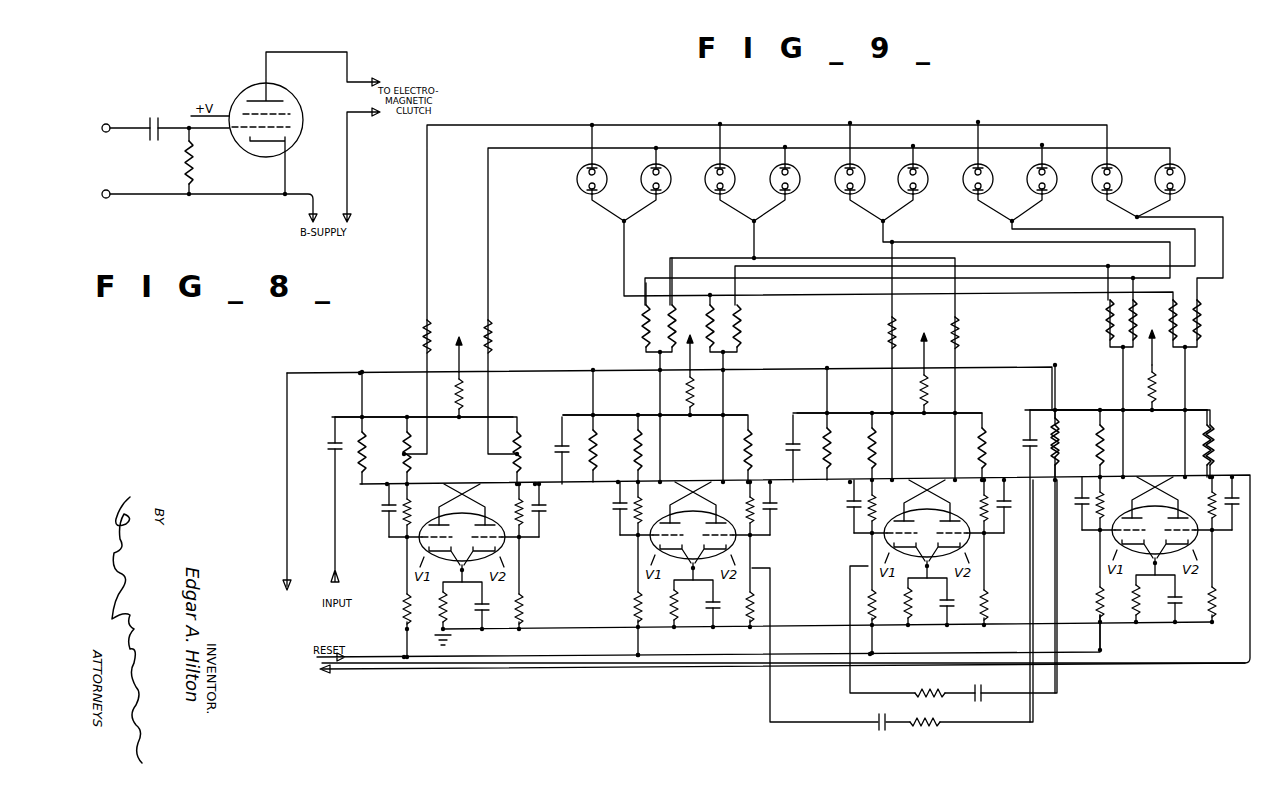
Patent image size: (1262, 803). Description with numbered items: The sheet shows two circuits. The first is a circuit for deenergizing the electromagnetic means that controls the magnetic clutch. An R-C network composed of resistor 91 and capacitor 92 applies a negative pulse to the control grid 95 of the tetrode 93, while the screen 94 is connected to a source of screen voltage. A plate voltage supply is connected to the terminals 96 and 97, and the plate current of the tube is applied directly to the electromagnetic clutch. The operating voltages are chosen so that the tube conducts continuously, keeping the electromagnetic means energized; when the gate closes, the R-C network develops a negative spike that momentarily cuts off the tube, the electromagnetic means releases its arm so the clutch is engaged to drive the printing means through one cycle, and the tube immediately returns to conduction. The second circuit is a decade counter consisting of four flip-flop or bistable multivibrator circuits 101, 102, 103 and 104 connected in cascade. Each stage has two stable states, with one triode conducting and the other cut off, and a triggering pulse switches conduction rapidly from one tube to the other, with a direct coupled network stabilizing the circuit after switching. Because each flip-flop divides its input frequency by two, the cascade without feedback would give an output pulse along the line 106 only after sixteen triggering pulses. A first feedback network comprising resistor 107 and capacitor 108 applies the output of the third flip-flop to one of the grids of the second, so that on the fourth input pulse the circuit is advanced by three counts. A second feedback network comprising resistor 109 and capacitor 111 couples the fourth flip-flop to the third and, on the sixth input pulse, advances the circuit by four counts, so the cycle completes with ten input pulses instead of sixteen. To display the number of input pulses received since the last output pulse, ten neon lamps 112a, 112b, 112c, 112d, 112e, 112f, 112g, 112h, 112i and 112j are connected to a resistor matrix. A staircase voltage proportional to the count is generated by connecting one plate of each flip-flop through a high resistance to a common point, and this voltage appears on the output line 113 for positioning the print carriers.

In FIG. 8, the resistor 91 is at (196, 175).
In FIG. 8, the capacitor 92 is at (152, 120).
In FIG. 8, the tetrode 93 is at (246, 91).
In FIG. 8, the screen 94 is at (287, 113).
In FIG. 8, the control grid 95 is at (290, 128).
In FIG. 8, the terminal 96 is at (300, 193).
In FIG. 8, the terminal 97 is at (350, 188).
In FIG. 9, the flip-flop circuit 101 is at (470, 432).
In FIG. 9, the flip-flop circuit 102 is at (703, 435).
In FIG. 9, the flip-flop circuit 103 is at (935, 435).
In FIG. 9, the flip-flop circuit 104 is at (1163, 427).
In FIG. 9, the output line 106 is at (453, 668).
In FIG. 9, the resistor 107 is at (947, 725).
In FIG. 9, the capacitor 108 is at (872, 728).
In FIG. 9, the resistor 109 is at (917, 690).
In FIG. 9, the capacitor 111 is at (984, 684).
In FIG. 9, the neon lamp 112a is at (580, 198).
In FIG. 9, the neon lamp 112b is at (665, 198).
In FIG. 9, the neon lamp 112c is at (712, 198).
In FIG. 9, the neon lamp 112d is at (795, 197).
In FIG. 9, the neon lamp 112e is at (862, 188).
In FIG. 9, the neon lamp 112f is at (922, 197).
In FIG. 9, the neon lamp 112g is at (990, 186).
In FIG. 9, the neon lamp 112h is at (1052, 196).
In FIG. 9, the neon lamp 112i is at (1119, 187).
In FIG. 9, the neon lamp 112j is at (1182, 186).
In FIG. 9, the output line 113 is at (287, 490).